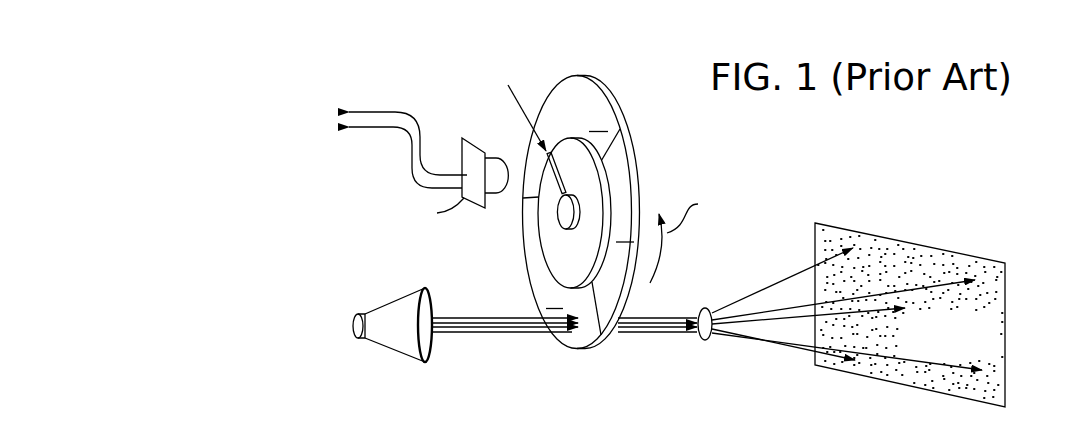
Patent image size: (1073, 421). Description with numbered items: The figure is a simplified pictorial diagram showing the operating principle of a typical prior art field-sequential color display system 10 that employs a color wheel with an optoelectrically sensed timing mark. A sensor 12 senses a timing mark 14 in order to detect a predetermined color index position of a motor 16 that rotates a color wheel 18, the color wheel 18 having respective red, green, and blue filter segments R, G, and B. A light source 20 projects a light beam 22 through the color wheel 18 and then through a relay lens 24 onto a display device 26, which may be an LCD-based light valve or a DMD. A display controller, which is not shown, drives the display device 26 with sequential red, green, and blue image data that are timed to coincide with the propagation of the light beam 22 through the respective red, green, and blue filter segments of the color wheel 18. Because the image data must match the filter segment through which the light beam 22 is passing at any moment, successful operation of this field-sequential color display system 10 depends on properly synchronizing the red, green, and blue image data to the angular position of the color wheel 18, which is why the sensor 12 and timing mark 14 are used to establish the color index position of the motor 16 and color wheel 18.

The FSC display system 10 is at (771, 162).
The sensor 12 is at (498, 168).
The timing mark 14 is at (555, 171).
The motor 16 is at (547, 245).
The color wheel 18 is at (628, 108).
The light source 20 is at (382, 307).
The light beam 22 is at (641, 334).
The relay lens 24 is at (702, 307).
The display device 26 is at (907, 258).